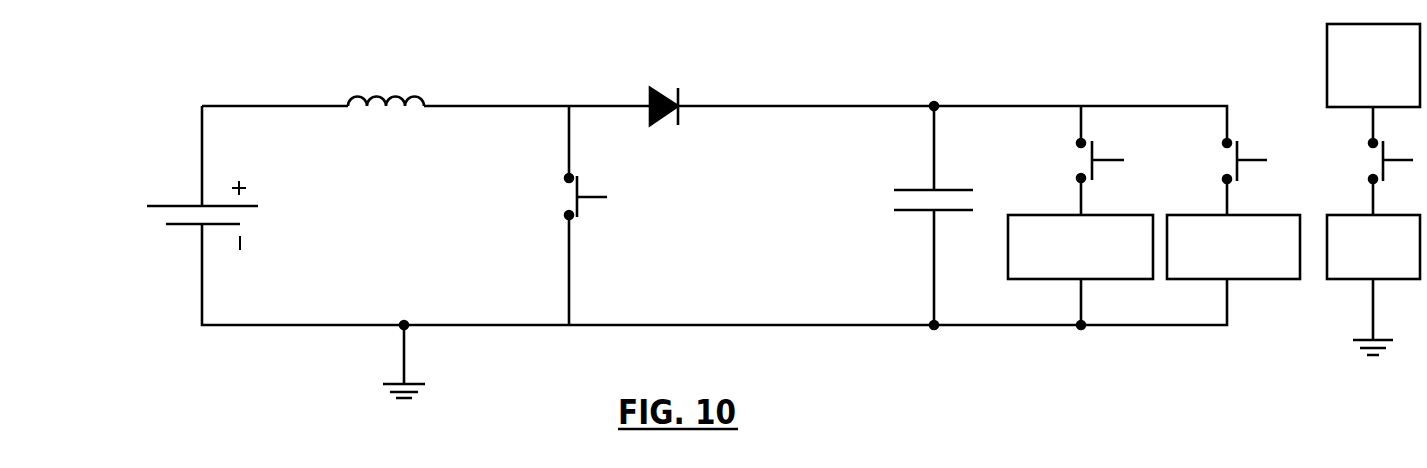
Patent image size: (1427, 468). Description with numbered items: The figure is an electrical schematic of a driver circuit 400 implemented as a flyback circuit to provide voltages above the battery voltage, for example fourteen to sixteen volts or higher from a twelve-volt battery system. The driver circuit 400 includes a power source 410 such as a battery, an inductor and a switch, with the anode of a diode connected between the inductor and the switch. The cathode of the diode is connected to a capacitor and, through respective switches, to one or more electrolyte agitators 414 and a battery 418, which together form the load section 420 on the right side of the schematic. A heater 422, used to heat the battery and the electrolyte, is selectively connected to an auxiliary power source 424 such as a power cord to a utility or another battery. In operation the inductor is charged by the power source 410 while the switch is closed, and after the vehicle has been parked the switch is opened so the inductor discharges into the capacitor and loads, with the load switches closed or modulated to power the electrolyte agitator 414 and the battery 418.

The driver circuit 400 is at (272, 72).
The power source 410 is at (147, 160).
The electrolyte agitator 414 is at (1105, 279).
The battery 418 is at (1240, 279).
The load section 420 is at (1154, 60).
The heater 422 is at (1346, 279).
The auxiliary power source 424 is at (1326, 60).